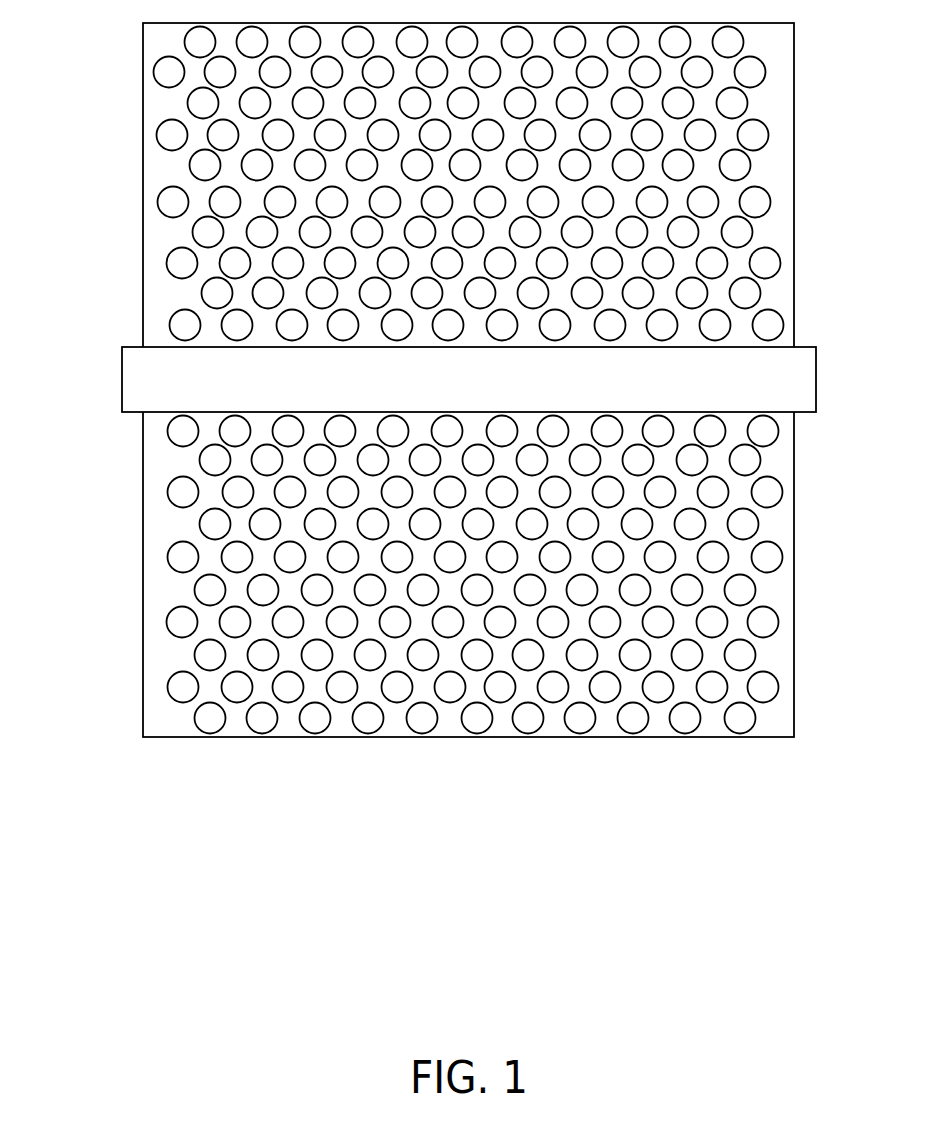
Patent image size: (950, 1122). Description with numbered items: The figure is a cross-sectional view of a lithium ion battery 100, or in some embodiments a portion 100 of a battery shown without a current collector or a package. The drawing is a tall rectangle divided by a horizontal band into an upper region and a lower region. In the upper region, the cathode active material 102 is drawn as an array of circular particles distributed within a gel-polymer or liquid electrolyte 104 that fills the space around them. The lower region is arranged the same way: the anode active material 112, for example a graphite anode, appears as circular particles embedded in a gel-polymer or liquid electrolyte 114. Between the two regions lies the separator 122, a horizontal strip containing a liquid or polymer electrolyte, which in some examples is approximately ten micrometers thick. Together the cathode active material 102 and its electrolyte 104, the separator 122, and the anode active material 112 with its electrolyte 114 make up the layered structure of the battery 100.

The battery 100 is at (493, 1046).
The cathode active material 102 is at (157, 131).
The gel-polymer or liquid electrolyte 104 is at (413, 184).
The anode active material 112 is at (778, 631).
The gel-polymer or liquid electrolyte 114 is at (521, 575).
The separator 122 is at (142, 383).